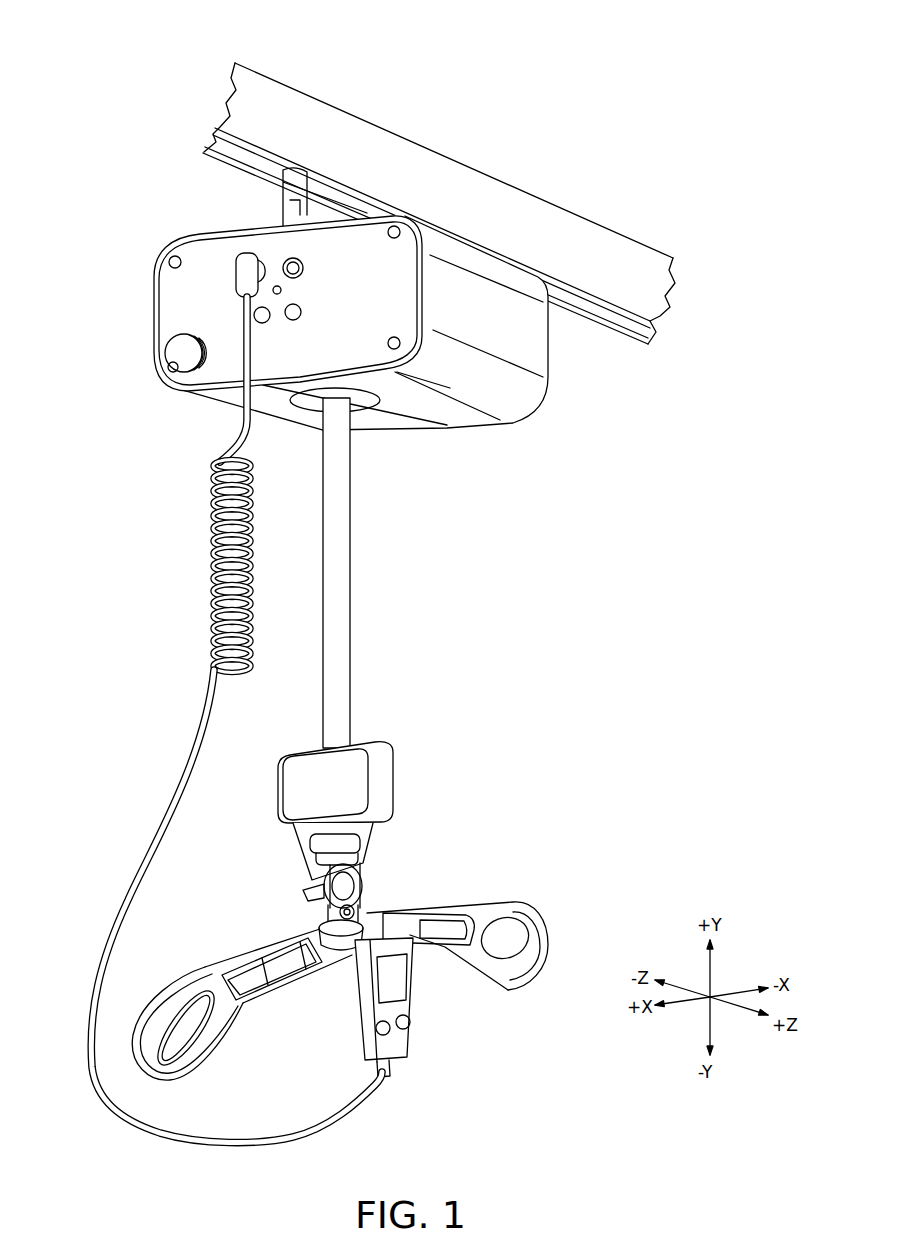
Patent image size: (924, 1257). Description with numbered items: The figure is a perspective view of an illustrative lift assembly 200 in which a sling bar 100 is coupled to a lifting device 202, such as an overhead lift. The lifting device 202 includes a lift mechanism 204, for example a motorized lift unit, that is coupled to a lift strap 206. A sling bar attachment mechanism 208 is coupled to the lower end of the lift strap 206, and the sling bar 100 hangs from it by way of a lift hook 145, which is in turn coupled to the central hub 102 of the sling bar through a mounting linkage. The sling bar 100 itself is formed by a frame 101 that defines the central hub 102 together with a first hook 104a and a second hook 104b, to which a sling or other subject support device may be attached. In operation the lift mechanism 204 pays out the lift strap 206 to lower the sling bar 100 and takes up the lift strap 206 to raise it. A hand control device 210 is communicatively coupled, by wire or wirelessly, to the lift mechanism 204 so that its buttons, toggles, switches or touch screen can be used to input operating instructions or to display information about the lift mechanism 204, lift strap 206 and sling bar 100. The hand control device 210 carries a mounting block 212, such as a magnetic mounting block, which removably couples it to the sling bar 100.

The lift assembly 200 is at (92, 110).
The lifting device 202 is at (413, 363).
The lift mechanism 204 is at (533, 340).
The lift strap 206 is at (337, 537).
The sling bar attachment mechanism 208 is at (394, 728).
The lift hook 145 is at (300, 876).
The mounting block 212 is at (323, 923).
The sling bar 100 is at (339, 903).
The frame 101 is at (339, 905).
The central hub 102 is at (198, 991).
The first hook 104a is at (160, 973).
The second hook 104b is at (550, 917).
The hand control device 210 is at (398, 1045).